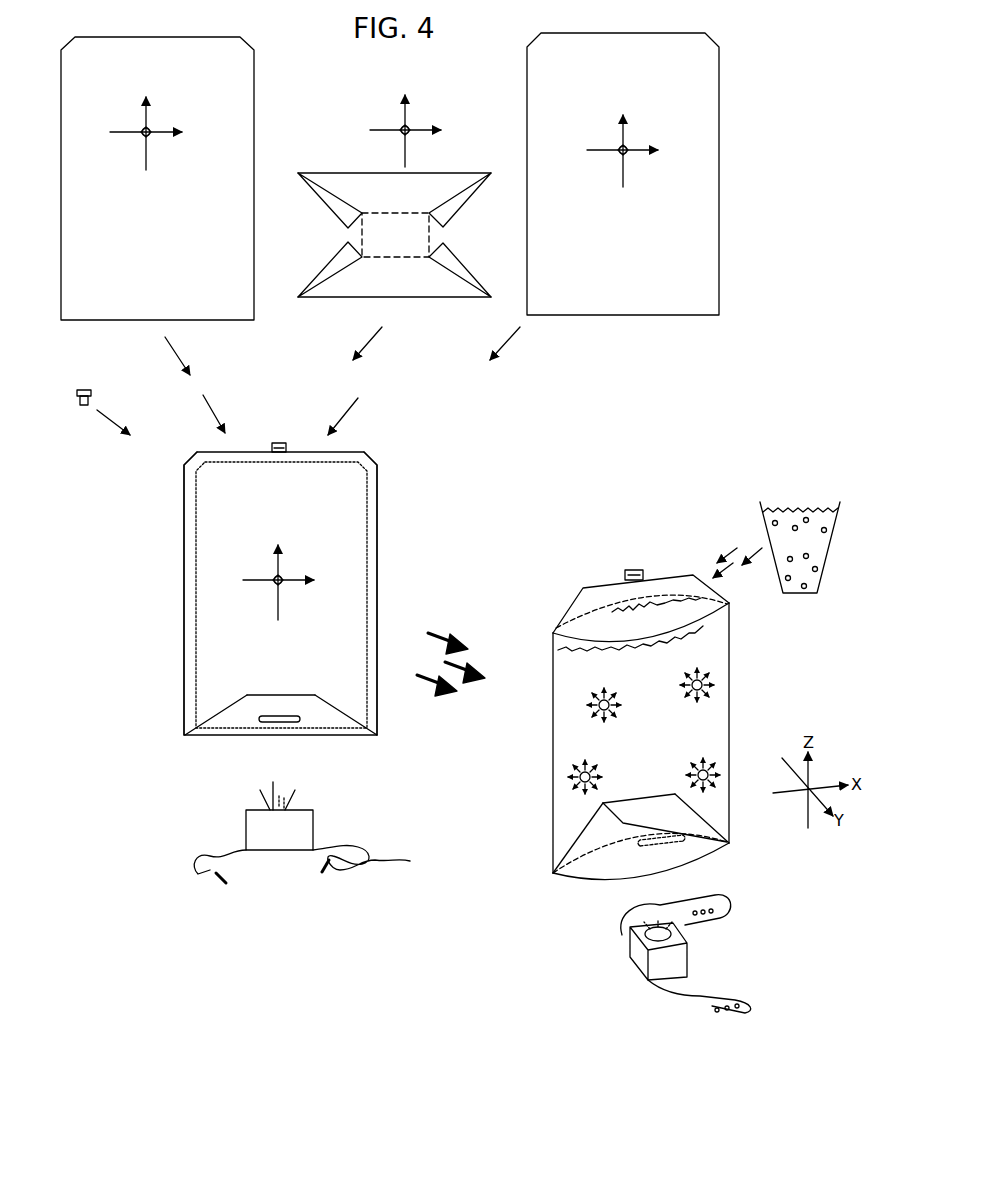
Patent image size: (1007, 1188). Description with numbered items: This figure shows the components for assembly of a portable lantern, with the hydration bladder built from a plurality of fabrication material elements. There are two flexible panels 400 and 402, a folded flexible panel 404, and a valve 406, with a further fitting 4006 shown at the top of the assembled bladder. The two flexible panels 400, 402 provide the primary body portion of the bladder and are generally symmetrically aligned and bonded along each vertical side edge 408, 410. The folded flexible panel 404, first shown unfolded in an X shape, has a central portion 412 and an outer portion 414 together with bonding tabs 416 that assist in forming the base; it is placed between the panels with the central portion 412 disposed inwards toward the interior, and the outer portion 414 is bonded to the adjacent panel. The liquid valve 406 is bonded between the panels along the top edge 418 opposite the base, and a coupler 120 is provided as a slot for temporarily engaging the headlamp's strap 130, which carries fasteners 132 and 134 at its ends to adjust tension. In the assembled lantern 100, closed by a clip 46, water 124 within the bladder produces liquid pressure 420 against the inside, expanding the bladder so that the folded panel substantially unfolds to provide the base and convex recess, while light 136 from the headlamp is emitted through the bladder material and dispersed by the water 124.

The flexible panel 400 is at (200, 258).
The flexible panel 402 is at (694, 291).
The folded flexible panel 404 is at (412, 242).
The valve 406 is at (84, 390).
The connector clip 4006 is at (278, 443).
The central portion 412 is at (429, 237).
The outer portion 414 is at (428, 290).
The bonding tabs 416 is at (340, 208).
The top edge 418 is at (304, 458).
The vertical side edge 408 is at (377, 546).
The vertical side edge 410 is at (193, 560).
The coupler 120 is at (270, 722).
The hydration container 100 is at (428, 497).
The light 136 is at (296, 797).
The strap 130 is at (663, 990).
The fastener 132 is at (723, 912).
The fastener 134 is at (710, 1007).
The closure clip 46 is at (634, 570).
The water 124 is at (818, 555).
The liquid pressure 420 is at (705, 690).